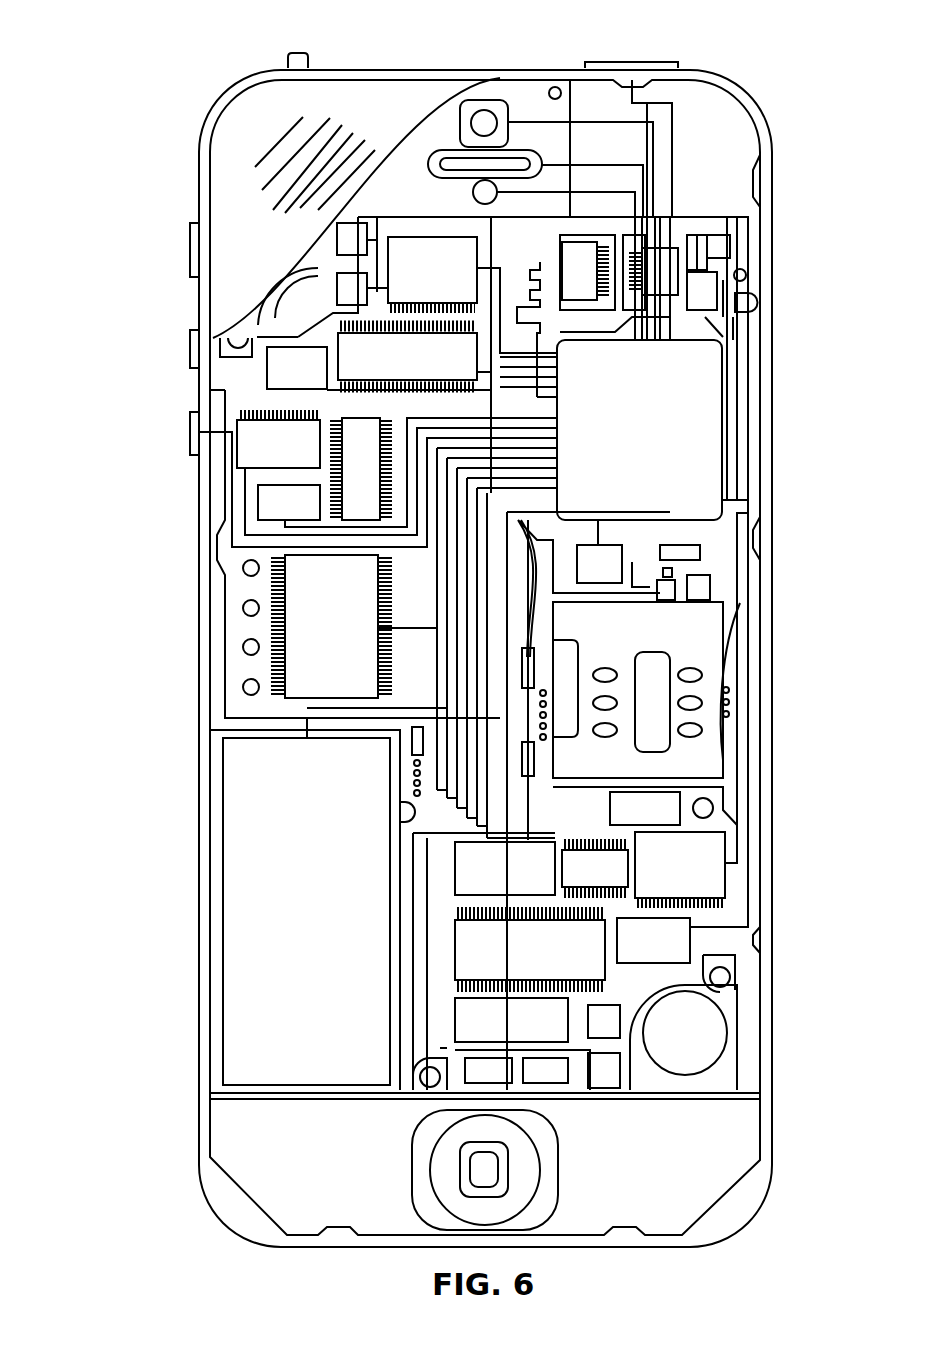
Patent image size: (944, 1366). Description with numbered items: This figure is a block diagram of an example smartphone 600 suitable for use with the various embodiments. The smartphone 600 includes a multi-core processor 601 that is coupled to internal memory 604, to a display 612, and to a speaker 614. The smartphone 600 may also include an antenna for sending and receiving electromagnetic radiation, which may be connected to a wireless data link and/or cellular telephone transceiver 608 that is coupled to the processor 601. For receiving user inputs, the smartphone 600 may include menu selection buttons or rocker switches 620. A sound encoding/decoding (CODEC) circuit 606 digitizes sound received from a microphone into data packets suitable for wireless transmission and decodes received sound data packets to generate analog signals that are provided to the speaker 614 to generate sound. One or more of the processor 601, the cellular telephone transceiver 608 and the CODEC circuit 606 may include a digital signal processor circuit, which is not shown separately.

The smartphone 600 is at (170, 84).
The multi-core processor 601 is at (639, 430).
The internal memory 604 is at (432, 272).
The sound encoding/decoding (CODEC) circuit 606 is at (407, 356).
The cellular telephone transceiver 608 is at (677, 248).
The display 612 is at (225, 178).
The speaker 614 is at (447, 152).
The menu selection buttons or rocker switches 620 is at (192, 247).